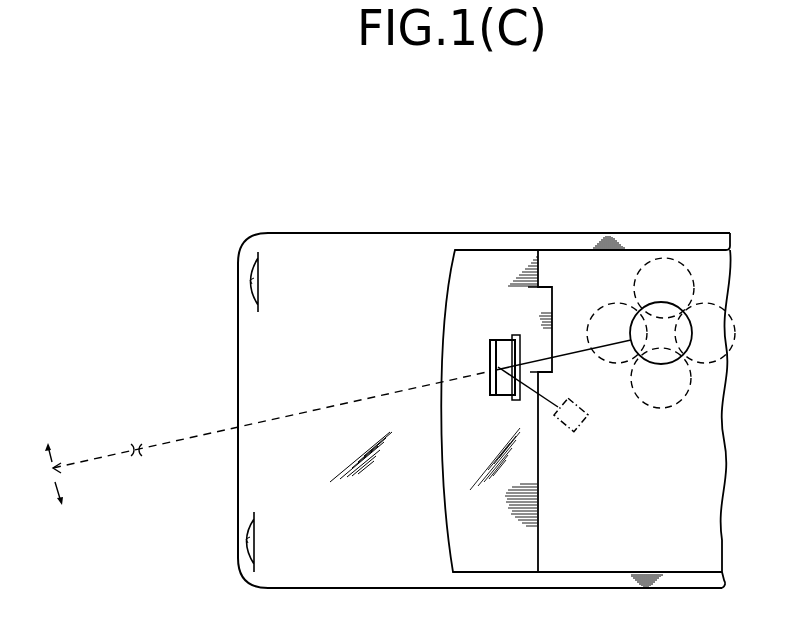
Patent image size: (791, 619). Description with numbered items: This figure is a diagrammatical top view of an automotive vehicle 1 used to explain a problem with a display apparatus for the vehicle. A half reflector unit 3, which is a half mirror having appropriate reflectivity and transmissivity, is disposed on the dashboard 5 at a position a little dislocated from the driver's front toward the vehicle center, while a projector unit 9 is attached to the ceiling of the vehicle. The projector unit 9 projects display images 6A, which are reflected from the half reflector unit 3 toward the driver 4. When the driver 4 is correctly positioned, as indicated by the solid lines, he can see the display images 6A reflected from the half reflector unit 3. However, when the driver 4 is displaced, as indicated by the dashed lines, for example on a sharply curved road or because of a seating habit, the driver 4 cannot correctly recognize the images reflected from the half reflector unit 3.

The automotive vehicle 1 is at (323, 243).
The half reflector unit 3 is at (498, 338).
The driver 4 is at (670, 318).
The dashboard 5 is at (510, 262).
The display images 6A is at (58, 460).
The projector unit 9 is at (592, 426).